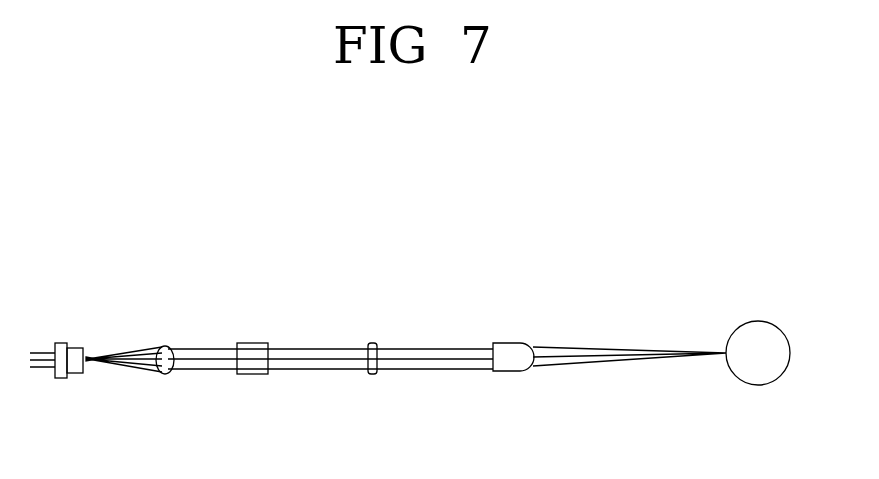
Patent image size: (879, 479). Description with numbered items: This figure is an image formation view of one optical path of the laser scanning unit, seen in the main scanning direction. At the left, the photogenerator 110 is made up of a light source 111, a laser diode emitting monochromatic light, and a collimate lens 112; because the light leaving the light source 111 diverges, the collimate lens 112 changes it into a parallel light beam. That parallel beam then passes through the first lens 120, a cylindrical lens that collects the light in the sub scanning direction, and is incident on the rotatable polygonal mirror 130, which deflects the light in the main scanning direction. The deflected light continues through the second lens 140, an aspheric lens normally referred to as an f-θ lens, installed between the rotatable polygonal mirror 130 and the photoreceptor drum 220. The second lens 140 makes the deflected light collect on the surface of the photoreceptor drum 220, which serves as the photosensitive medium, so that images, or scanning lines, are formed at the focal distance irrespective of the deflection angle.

The photogenerator 110 is at (163, 248).
The light source 111 is at (62, 343).
The collimate lens 112 is at (165, 346).
The first lens 120 is at (253, 343).
The rotatable polygonal mirror 130 is at (372, 343).
The second lens 140 is at (503, 343).
The photoreceptor drum 220 is at (760, 321).